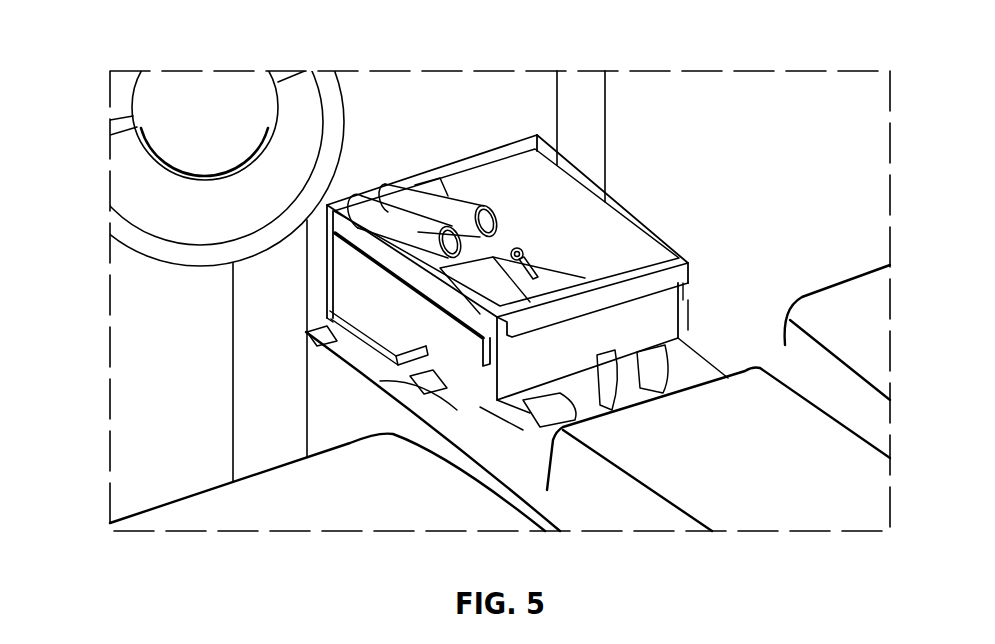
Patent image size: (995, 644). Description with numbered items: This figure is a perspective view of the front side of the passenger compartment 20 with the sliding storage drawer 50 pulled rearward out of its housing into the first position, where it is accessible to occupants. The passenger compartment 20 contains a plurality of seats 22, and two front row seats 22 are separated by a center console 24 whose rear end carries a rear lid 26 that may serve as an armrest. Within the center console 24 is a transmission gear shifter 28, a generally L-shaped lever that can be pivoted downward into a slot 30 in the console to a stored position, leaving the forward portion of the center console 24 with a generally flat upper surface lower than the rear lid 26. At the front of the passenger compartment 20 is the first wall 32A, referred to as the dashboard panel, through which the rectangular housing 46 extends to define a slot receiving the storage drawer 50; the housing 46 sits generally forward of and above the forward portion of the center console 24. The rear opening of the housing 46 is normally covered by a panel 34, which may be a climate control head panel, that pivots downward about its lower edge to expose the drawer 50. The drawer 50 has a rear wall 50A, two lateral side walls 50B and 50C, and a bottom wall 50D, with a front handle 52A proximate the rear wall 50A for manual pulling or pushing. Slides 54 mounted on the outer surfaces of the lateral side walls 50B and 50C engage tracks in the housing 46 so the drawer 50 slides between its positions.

The passenger compartment 20 is at (754, 128).
The seats 22 is at (862, 300).
The center console 24 is at (333, 336).
The rear lid 26 is at (782, 440).
The transmission gear shifter 28 is at (375, 354).
The slot 30 is at (380, 381).
The first wall 32A is at (408, 127).
The panel 34 is at (330, 305).
The rectangular housing 46 is at (552, 280).
The sliding storage drawer 50 is at (605, 187).
The rear wall 50A is at (622, 327).
The lateral side wall 50B is at (490, 375).
The lateral side wall 50C is at (632, 254).
The bottom wall 50D is at (607, 180).
The front handle 52A is at (680, 288).
The slides 54 is at (687, 330).